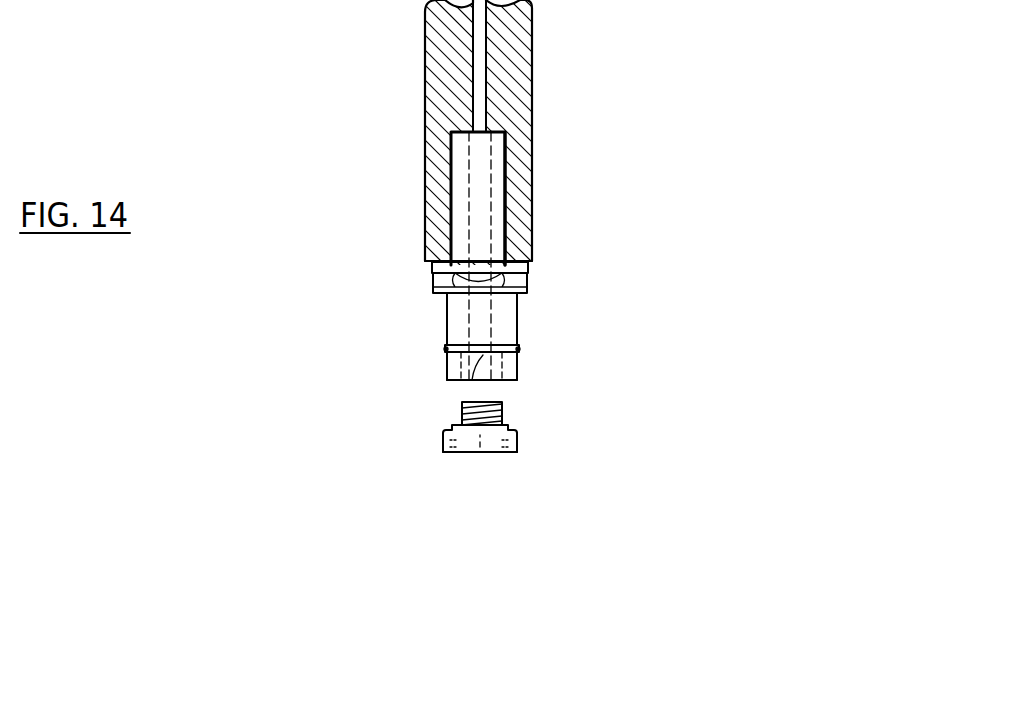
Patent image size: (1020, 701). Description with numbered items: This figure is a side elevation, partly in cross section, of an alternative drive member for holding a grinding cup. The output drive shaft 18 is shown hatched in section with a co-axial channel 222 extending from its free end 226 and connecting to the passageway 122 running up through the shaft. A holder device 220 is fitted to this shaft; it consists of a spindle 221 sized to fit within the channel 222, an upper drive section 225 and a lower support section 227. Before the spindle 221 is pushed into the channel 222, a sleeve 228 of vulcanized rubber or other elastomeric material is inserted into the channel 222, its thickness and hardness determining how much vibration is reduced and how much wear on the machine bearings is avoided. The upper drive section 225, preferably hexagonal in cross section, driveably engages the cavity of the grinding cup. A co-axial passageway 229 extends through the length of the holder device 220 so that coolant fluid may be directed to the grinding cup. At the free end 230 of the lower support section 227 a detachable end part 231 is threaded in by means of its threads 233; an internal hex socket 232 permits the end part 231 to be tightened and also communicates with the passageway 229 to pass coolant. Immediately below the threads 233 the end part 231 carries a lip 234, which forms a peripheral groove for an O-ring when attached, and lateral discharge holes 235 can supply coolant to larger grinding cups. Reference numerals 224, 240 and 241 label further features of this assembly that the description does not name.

The output drive shaft 18 is at (448, 47).
The passageway 122 is at (480, 32).
The holder device 220 is at (607, 102).
The spindle 221 is at (462, 228).
The channel 222 is at (443, 168).
The insert assembly 224 is at (617, 343).
The upper drive section 225 is at (525, 283).
The free end 226 is at (430, 268).
The lower support section 227 is at (445, 327).
The sleeve 228 is at (510, 168).
The passageway 229 is at (513, 228).
The free end 230 is at (514, 383).
The end part 231 is at (600, 450).
The hex socket 232 is at (480, 453).
The threads 233 is at (462, 410).
The lip 234 is at (440, 426).
The lateral discharge holes 235 is at (510, 453).
The sleeve 240 is at (472, 381).
The flange 241 is at (520, 350).